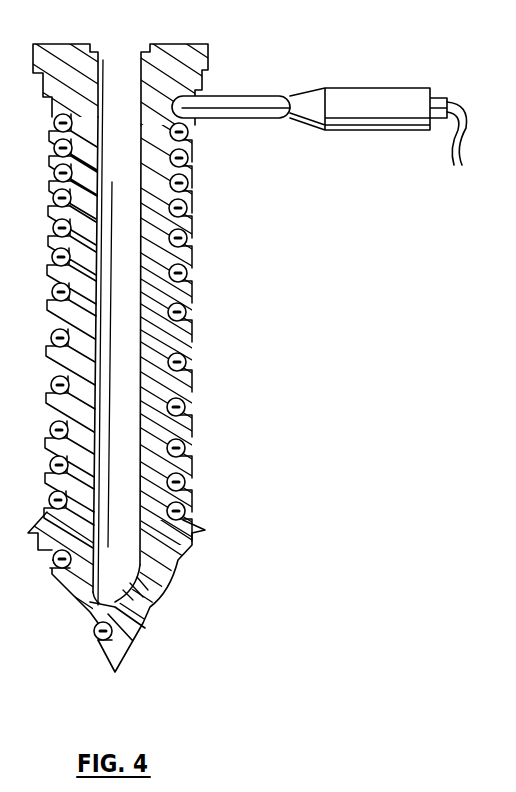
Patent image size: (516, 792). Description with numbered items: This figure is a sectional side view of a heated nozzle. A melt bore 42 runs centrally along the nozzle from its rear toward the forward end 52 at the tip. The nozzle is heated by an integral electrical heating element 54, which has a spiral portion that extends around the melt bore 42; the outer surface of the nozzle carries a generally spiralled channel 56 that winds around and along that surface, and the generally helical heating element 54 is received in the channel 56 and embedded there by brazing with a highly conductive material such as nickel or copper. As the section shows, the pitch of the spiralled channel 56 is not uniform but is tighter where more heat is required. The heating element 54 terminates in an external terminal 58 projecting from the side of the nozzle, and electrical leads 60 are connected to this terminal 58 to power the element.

The melt bore 42 is at (113, 250).
The forward end 52 is at (93, 632).
The electrical heating element 54 is at (195, 272).
The spiralled channel 56 is at (197, 312).
The external terminal 58 is at (383, 88).
The electrical leads 60 is at (463, 146).